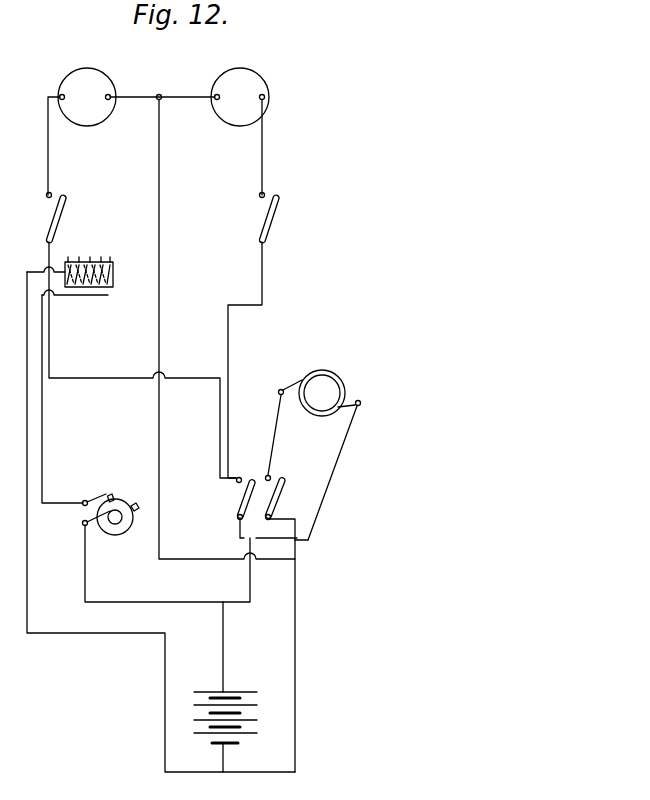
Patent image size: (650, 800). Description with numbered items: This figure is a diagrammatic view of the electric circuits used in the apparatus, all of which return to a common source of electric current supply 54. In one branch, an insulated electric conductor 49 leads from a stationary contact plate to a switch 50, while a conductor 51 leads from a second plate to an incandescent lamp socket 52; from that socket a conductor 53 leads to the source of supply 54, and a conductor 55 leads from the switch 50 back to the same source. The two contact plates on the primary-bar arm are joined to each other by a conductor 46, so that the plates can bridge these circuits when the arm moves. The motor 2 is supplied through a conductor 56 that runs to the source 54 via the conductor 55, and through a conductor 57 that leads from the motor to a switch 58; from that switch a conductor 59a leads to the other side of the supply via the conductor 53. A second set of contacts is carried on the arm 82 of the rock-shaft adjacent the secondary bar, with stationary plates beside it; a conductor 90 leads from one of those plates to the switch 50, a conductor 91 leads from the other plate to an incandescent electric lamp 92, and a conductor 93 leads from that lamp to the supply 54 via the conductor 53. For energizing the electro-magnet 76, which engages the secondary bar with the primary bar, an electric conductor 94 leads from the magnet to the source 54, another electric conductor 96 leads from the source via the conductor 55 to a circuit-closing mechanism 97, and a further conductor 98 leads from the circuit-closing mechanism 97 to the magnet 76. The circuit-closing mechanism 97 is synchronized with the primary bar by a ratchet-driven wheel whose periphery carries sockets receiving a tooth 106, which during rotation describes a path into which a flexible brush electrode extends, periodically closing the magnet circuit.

The motor 2 is at (327, 391).
The conductor 46 is at (279, 214).
The insulated electric conductor 49 is at (264, 264).
The switch 50 is at (244, 498).
The conductor 51 is at (265, 157).
The incandescent lamp socket 52 is at (256, 83).
The conductor 53 is at (176, 104).
The source of electric current supply 54 is at (246, 713).
The conductor 55 is at (251, 586).
The conductor 56 is at (326, 497).
The conductor 57 is at (272, 427).
The switch 58 is at (281, 494).
The conductor 59a is at (298, 549).
The electro-magnet 76 is at (95, 262).
The arm 82 is at (65, 215).
The conductor 90 is at (53, 354).
The conductor 91 is at (50, 150).
The incandescent electric lamp 92 is at (96, 83).
The conductor 93 is at (143, 95).
The electric conductor 94 is at (92, 634).
The electric conductor 96 is at (157, 604).
The circuit-closing mechanism 97 is at (115, 524).
The conductor 98 is at (44, 436).
The tooth 106 is at (108, 494).